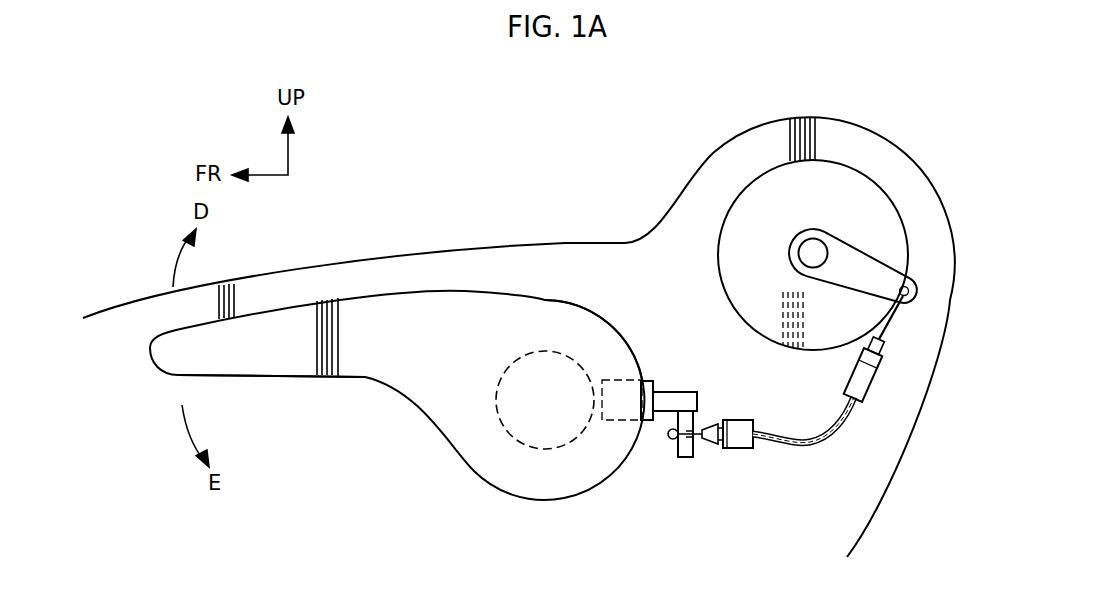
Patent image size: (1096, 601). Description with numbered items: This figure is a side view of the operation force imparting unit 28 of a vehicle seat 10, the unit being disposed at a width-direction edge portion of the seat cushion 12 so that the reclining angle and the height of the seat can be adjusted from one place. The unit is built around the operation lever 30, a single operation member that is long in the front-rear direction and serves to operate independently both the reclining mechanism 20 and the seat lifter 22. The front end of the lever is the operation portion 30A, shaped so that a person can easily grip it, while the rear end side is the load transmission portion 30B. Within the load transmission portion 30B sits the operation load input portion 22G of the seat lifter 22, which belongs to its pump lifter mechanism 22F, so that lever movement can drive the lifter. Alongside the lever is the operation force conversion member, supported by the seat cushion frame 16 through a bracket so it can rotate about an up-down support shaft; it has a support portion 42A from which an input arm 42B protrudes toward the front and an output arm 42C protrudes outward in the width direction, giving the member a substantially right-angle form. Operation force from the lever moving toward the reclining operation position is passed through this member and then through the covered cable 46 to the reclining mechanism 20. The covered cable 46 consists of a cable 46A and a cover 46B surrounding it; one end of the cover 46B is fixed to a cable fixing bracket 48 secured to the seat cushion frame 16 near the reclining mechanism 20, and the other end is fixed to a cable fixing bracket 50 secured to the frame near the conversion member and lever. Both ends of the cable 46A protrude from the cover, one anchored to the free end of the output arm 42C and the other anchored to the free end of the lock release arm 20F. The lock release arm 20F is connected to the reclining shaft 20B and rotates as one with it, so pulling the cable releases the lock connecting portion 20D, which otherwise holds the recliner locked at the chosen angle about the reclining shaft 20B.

The vehicle seat 10 is at (651, 106).
The seat cushion 12 is at (519, 337).
The seat cushion frame 16 is at (226, 301).
The reclining mechanism 20 is at (849, 218).
The reclining shaft 20B is at (810, 248).
The lock connecting portion 20D is at (860, 205).
The lock release arm 20F is at (865, 268).
The seat lifter 22 is at (626, 444).
The pump lifter mechanism 22F is at (626, 444).
The operation load input portion 22G is at (557, 447).
The operation force imparting unit 28 is at (542, 269).
The operation lever 30 is at (408, 354).
The operation portion 30A is at (255, 362).
The load transmission portion 30B is at (589, 320).
The support portion 42A is at (672, 398).
The input arm 42B is at (649, 380).
The output arm 42C is at (684, 458).
The covered cable 46 is at (801, 400).
The cable 46A is at (700, 428).
The cover 46B is at (776, 434).
The cable fixing bracket 48 is at (871, 398).
The cable fixing bracket 50 is at (743, 449).